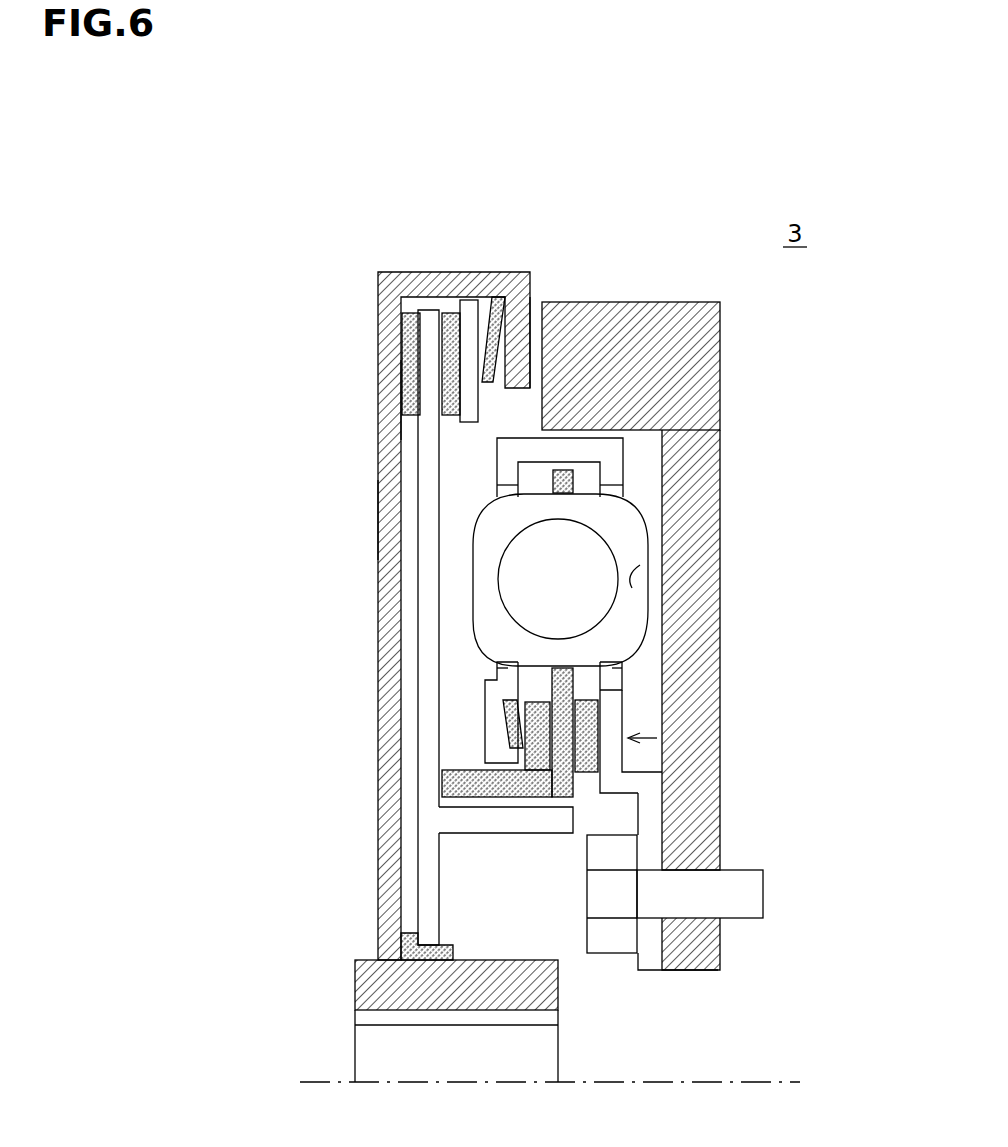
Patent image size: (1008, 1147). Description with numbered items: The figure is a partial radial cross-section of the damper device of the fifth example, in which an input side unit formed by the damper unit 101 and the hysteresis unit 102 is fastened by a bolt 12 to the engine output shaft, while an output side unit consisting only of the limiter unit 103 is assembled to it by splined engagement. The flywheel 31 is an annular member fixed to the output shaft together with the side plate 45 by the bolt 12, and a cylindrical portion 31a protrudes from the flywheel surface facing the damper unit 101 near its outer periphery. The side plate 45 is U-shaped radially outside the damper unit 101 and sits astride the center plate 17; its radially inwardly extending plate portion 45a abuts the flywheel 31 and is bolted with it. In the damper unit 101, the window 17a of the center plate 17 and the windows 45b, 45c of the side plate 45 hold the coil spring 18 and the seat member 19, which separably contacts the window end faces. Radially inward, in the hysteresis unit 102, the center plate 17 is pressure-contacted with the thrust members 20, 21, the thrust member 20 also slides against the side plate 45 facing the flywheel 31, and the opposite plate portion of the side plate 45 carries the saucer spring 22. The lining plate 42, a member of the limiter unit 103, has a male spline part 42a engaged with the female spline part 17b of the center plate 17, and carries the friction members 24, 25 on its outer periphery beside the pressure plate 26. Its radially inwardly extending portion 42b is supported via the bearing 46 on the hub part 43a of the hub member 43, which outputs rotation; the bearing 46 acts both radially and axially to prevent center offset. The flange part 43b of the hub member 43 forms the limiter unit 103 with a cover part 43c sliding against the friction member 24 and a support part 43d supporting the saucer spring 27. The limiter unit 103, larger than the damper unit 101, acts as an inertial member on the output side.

The bolt 12 is at (765, 900).
The center plate 17 is at (610, 717).
The window 17a is at (575, 670).
The female spline part 17b is at (497, 790).
The coil spring 18 is at (640, 595).
The seat member 19 is at (637, 520).
The thrust member 20 is at (598, 758).
The thrust member 21 is at (527, 757).
The saucer spring 22 is at (505, 722).
The friction member 24 is at (412, 333).
The friction member 25 is at (437, 283).
The pressure plate 26 is at (473, 306).
The saucer spring 27 is at (502, 303).
The flywheel 31 is at (703, 505).
The cylindrical portion 31a is at (640, 305).
The lining plate 42 is at (430, 586).
The male spline part 42a is at (470, 812).
The radially inwardly extending portion 42b is at (428, 882).
The hub member 43 is at (356, 1004).
The hub part 43a is at (365, 976).
The flange part 43b is at (388, 522).
The cover part 43c is at (390, 396).
The support part 43d is at (531, 335).
The side plate 45 is at (610, 460).
The radially inwardly extending plate portion 45a is at (646, 960).
The window 45b is at (615, 668).
The window 45c is at (492, 668).
The bearing 46 is at (453, 952).
The damper unit 101 is at (640, 565).
The hysteresis unit 102 is at (662, 740).
The limiter unit 103 is at (360, 361).